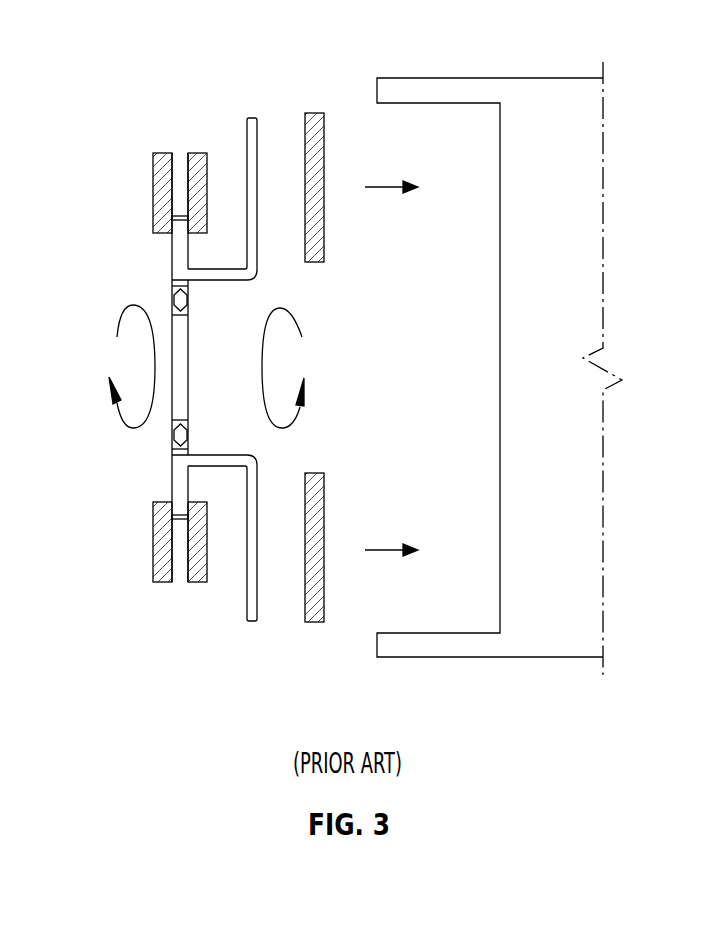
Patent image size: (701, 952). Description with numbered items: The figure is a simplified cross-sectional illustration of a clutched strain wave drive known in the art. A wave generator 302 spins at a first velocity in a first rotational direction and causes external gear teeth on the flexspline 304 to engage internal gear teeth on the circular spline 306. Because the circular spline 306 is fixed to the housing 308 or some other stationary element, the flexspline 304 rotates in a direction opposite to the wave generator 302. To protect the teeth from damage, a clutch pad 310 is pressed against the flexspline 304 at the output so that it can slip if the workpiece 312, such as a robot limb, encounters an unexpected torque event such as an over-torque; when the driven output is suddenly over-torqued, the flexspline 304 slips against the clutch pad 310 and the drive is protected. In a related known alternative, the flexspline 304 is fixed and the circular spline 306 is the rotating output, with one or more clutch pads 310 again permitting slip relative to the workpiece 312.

The wave generator 302 is at (177, 365).
The flexspline 304 is at (254, 120).
The circular spline 306 is at (173, 257).
The housing 308 is at (157, 550).
The clutch pad 310 is at (318, 597).
The workpiece 312 is at (528, 108).